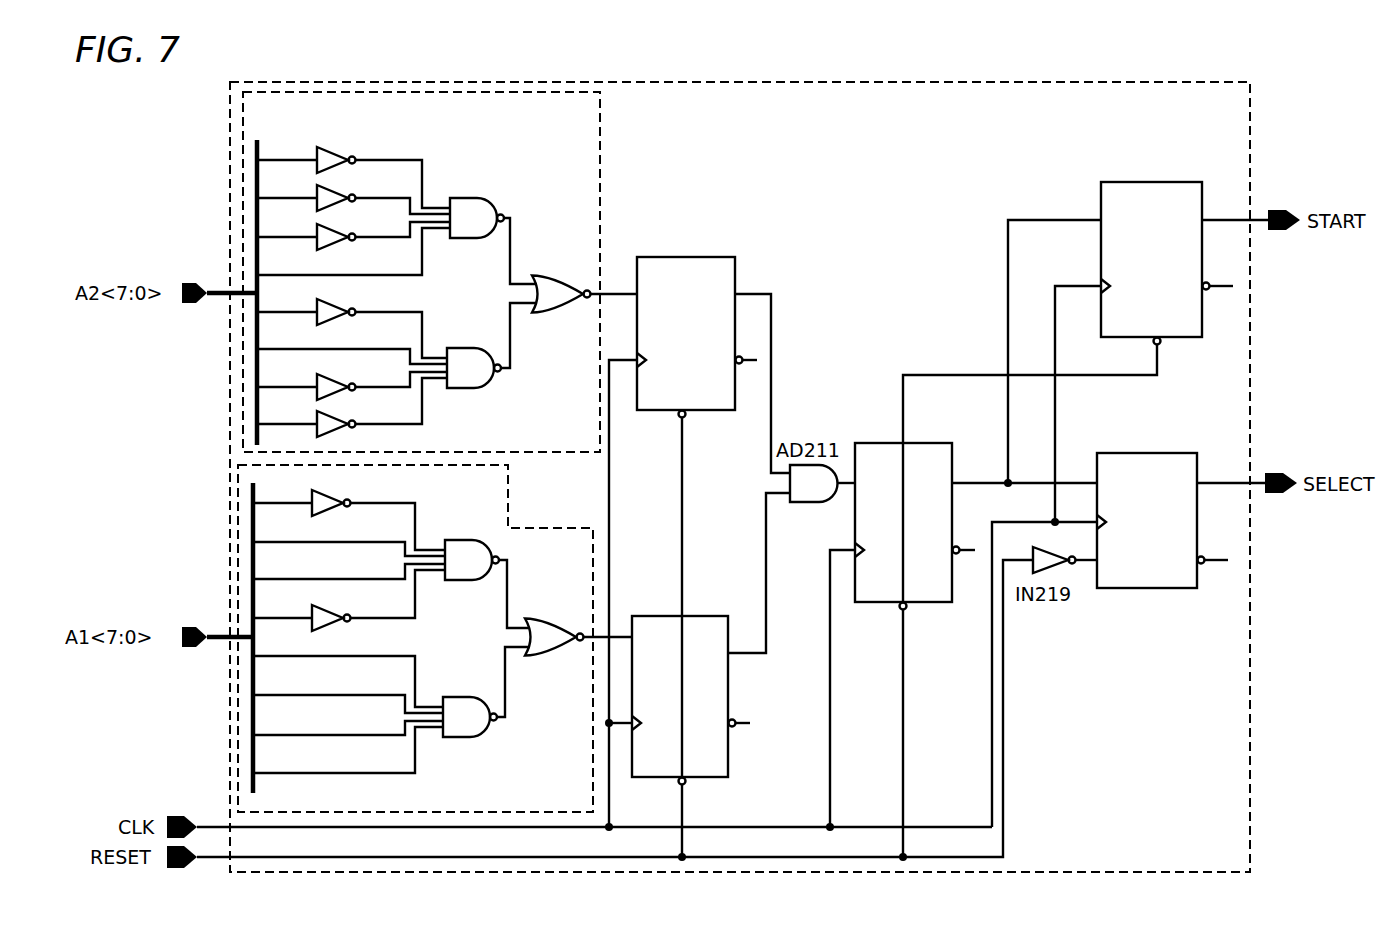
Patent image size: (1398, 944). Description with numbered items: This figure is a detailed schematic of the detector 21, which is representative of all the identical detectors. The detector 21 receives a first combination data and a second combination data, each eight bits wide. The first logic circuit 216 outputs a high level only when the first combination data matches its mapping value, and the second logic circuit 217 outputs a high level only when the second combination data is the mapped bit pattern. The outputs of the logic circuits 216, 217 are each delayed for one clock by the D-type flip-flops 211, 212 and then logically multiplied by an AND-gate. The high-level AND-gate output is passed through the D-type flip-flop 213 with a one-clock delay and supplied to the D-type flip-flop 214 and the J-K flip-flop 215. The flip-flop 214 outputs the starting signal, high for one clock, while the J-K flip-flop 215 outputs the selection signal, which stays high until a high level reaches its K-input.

The detector 21 is at (1250, 110).
The D-type flip-flop 211 is at (689, 255).
The D-type flip-flop 212 is at (653, 614).
The D-type flip-flop 213 is at (868, 441).
The D-type flip-flop 214 is at (1160, 180).
The J-K flip-flop 215 is at (1157, 451).
The first logic circuit 216 is at (508, 493).
The second logic circuit 217 is at (600, 140).